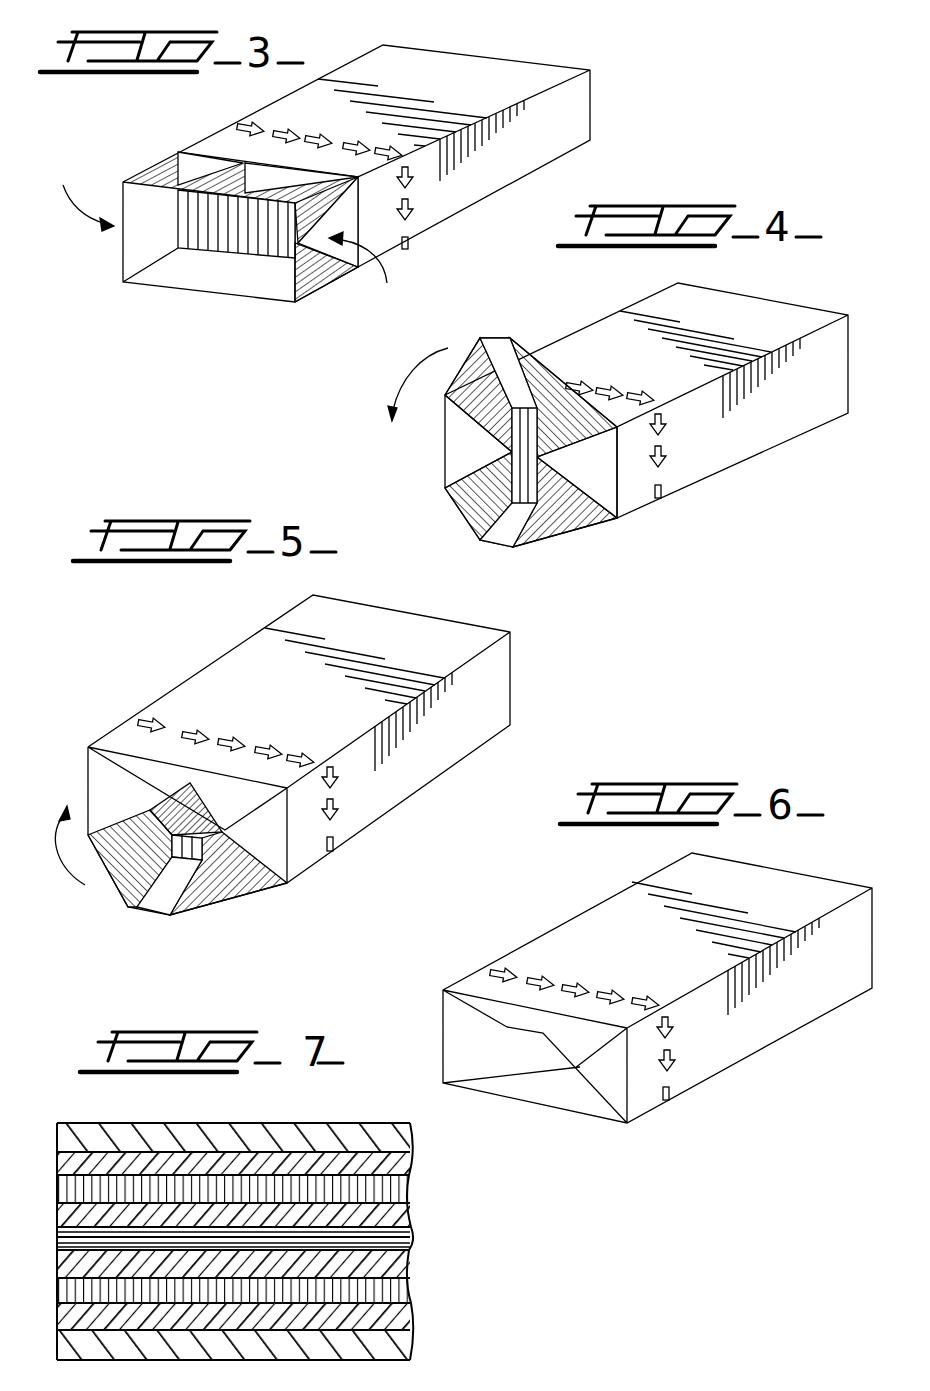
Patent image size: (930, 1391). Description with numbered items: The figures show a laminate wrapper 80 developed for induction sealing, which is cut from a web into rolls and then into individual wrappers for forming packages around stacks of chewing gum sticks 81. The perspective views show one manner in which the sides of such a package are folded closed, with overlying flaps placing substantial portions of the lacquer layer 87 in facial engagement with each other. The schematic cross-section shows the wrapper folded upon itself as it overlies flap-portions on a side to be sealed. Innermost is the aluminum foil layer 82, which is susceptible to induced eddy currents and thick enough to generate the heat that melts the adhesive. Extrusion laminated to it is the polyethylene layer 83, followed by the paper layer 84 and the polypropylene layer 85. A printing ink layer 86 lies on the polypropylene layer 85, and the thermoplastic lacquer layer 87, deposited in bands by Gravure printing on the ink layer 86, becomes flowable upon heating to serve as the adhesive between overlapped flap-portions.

In FIG. 3, the wrapper 80 is at (305, 308).
In FIG. 4, the wrapper 80 is at (579, 529).
In FIG. 5, the wrapper 80 is at (233, 905).
In FIG. 3, the chewing gum sticks 81 is at (242, 228).
In FIG. 7, the aluminum foil layer 82 is at (412, 1130).
In FIG. 7, the polyethylene layer 83 is at (412, 1160).
In FIG. 7, the paper layer 84 is at (412, 1188).
In FIG. 7, the polypropylene layer 85 is at (412, 1218).
In FIG. 7, the printing ink layer 86 is at (57, 1230).
In FIG. 7, the thermoplastic lacquer layer 87 is at (57, 1237).